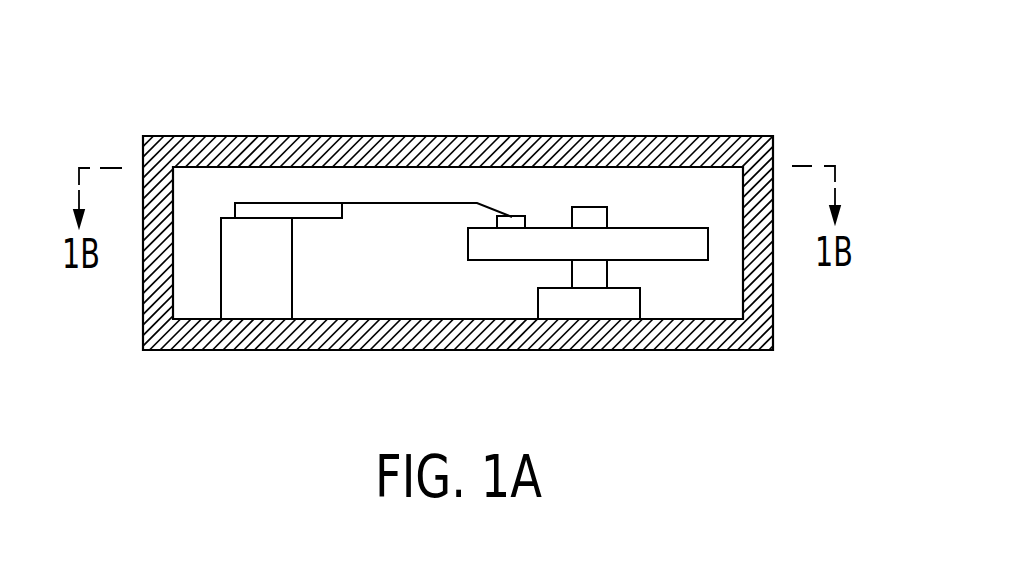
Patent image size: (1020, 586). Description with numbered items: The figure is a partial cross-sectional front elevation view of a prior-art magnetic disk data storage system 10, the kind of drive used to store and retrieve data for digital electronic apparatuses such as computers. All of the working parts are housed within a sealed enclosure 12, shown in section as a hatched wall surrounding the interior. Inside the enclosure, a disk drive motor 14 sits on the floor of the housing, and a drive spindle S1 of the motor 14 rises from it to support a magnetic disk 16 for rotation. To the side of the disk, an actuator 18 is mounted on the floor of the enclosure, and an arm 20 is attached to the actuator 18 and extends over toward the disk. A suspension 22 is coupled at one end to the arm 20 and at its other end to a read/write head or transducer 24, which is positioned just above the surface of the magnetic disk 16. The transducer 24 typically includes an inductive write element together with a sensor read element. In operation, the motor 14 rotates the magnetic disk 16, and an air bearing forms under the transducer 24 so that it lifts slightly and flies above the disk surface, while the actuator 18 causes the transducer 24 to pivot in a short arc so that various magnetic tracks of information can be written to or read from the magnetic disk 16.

The magnetic disk data storage system 10 is at (642, 93).
The sealed enclosure 12 is at (507, 340).
The disk drive motor 14 is at (597, 305).
The magnetic disk 16 is at (657, 238).
The actuator 18 is at (272, 265).
The arm 20 is at (313, 210).
The suspension 22 is at (401, 205).
The read/write head or transducer 24 is at (513, 216).
The drive spindle S1 is at (585, 215).